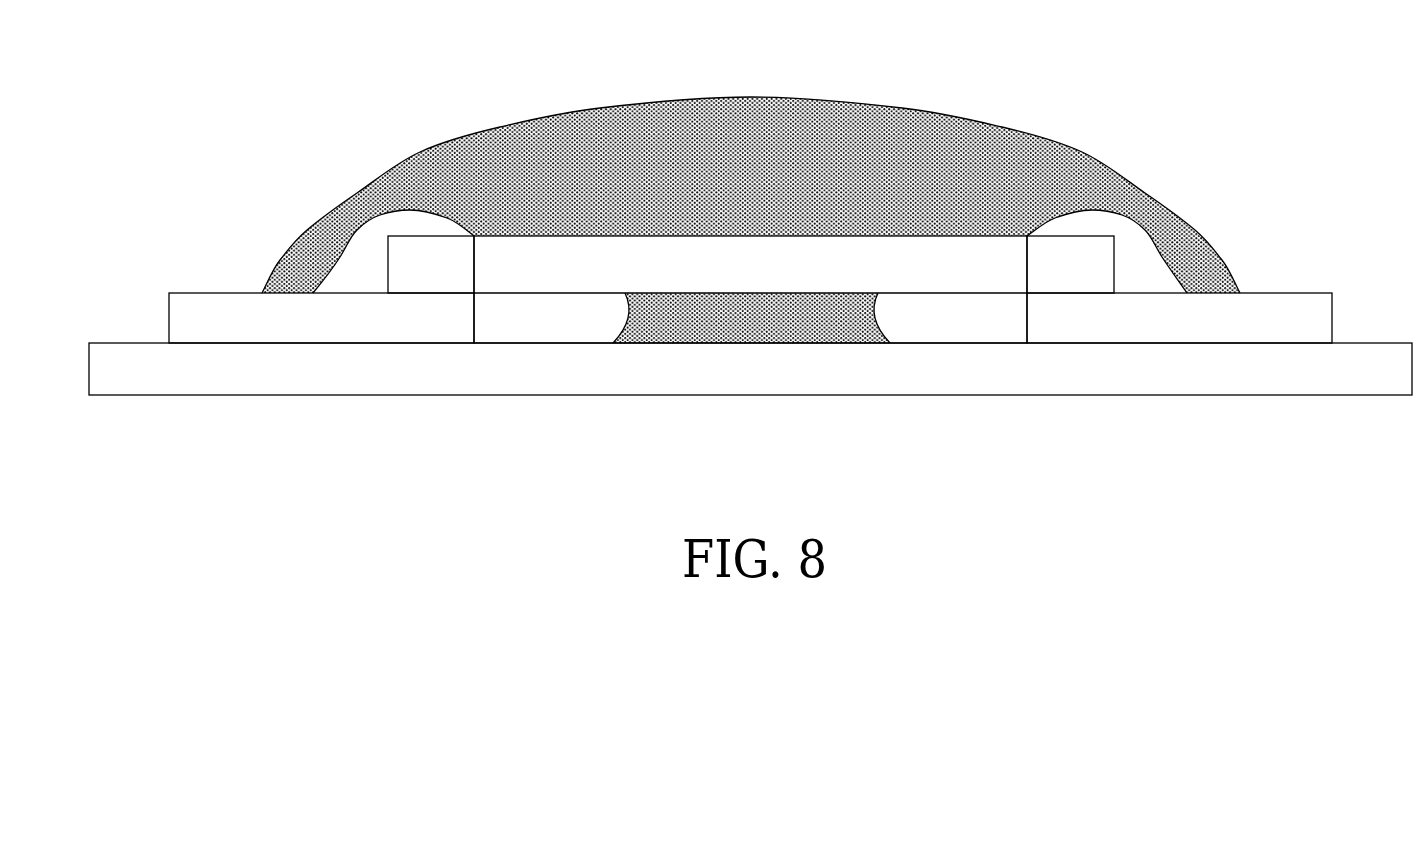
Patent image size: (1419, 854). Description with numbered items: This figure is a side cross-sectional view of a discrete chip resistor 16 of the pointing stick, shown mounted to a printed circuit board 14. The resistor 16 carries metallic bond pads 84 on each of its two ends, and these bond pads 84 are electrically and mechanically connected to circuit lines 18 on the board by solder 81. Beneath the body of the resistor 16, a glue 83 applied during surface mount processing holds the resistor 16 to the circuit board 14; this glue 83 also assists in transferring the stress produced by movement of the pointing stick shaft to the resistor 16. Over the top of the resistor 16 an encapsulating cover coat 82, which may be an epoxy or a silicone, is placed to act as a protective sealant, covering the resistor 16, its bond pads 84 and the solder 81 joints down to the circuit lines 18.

The printed circuit board 14 is at (1178, 395).
The discrete chip resistor 16 is at (663, 236).
The circuit lines 18 is at (213, 292).
The solder 81 is at (360, 260).
The encapsulating cover coat 82 is at (918, 140).
The glue 83 is at (765, 322).
The metallic bond pads 84 is at (1087, 235).